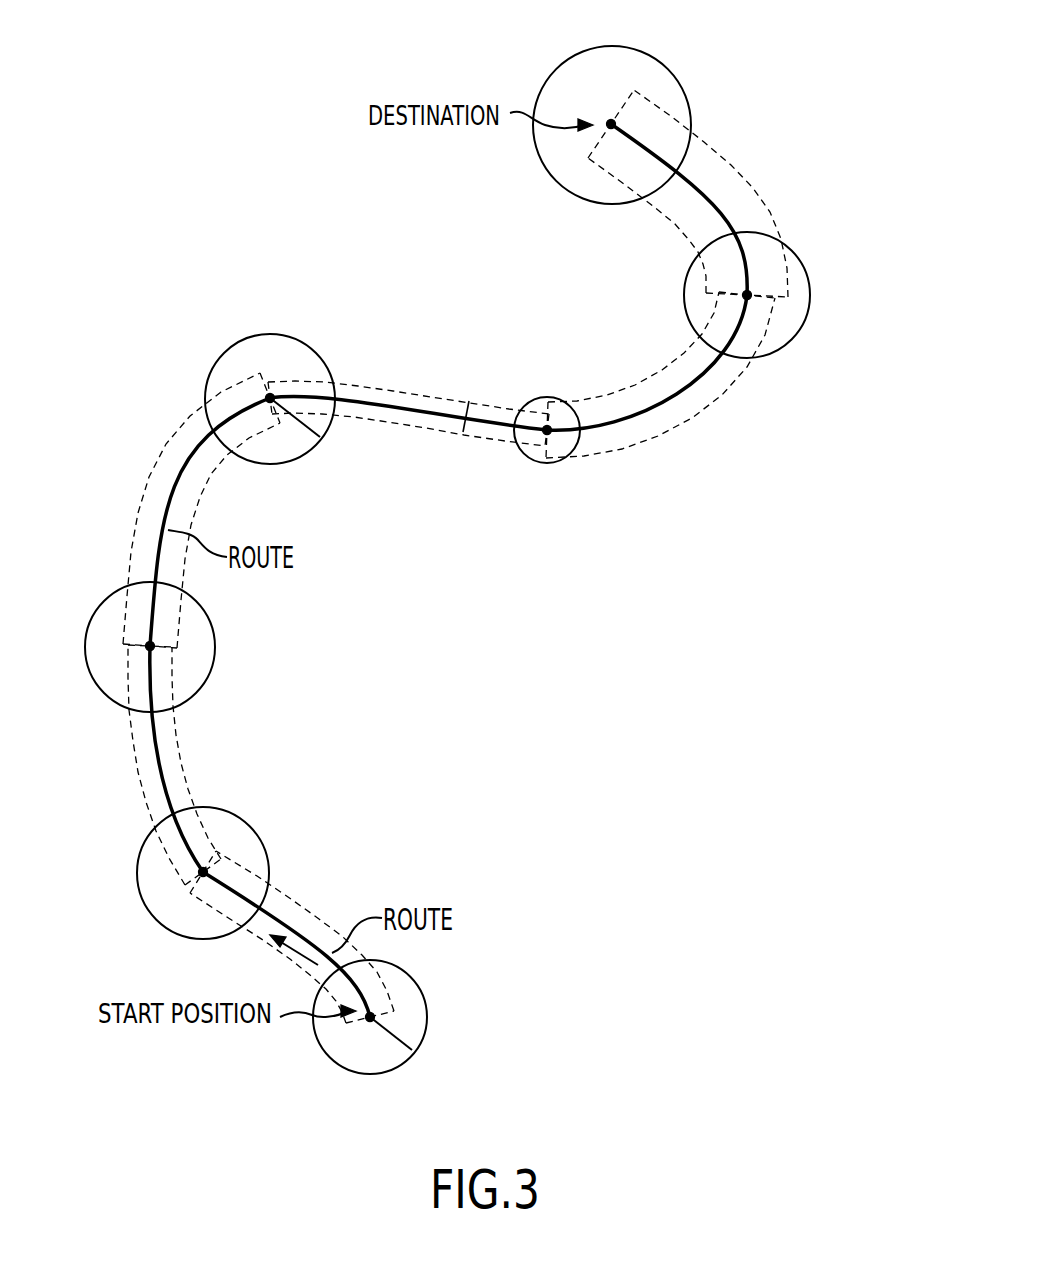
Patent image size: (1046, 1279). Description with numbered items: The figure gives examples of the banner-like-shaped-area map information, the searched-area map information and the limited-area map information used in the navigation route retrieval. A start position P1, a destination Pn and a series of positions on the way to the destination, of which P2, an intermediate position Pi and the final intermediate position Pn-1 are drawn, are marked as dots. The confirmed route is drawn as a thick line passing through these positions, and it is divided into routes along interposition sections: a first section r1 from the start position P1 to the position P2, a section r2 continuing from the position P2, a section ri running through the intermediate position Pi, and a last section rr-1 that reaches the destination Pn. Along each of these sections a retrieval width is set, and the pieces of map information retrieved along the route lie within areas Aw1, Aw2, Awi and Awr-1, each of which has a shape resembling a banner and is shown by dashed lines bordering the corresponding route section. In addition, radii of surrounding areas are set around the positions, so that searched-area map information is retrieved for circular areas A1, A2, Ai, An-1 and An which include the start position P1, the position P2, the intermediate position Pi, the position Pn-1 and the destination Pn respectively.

The destination Pn is at (611, 124).
The searched area An is at (682, 100).
The route along interposition section rr-1 is at (723, 215).
The banner-like-shaped area Awr-1 is at (667, 210).
The searched area An-1 is at (802, 282).
The intermediate position Pn-1 is at (747, 295).
The searched area Ai is at (290, 345).
The intermediate position Pi is at (270, 398).
The route along interposition section ri is at (370, 398).
The banner-like-shaped area Awi is at (413, 417).
The route along interposition section r2 is at (153, 730).
The banner-like-shaped area Aw2 is at (140, 757).
The searched area A2 is at (255, 842).
The intermediate position P2 is at (203, 872).
The route along interposition section r1 is at (268, 917).
The banner-like-shaped area Aw1 is at (315, 925).
The searched area A1 is at (405, 988).
The start position P1 is at (370, 1017).